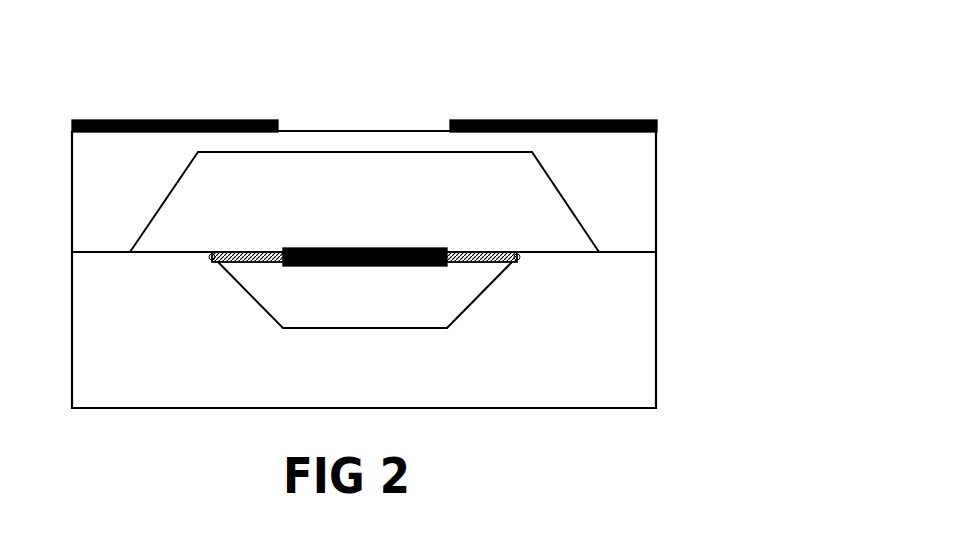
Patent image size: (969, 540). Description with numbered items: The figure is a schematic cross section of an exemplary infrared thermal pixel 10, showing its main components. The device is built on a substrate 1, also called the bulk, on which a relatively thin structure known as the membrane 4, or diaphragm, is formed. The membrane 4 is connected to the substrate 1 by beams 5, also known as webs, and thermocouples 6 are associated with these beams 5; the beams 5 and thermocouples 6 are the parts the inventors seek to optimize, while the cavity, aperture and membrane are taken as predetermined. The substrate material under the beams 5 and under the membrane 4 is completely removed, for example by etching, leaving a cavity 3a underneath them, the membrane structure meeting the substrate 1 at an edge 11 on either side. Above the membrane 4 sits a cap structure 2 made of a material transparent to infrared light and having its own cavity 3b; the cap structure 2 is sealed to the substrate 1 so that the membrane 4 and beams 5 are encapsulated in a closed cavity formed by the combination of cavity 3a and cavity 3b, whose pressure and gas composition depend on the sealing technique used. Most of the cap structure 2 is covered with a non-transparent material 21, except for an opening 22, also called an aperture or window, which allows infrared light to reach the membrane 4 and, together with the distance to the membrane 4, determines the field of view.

The substrate 1 is at (630, 327).
The cap structure 2 is at (630, 203).
The cavity underneath the membrane 3a is at (349, 312).
The cavity of the cap structure 3b is at (349, 213).
The membrane 4 is at (407, 247).
The beams 5 is at (223, 252).
The thermocouples 6 is at (480, 252).
The infrared thermal pixel 10 is at (695, 421).
The edge 11 is at (209, 262).
The non-transparent material 21 is at (593, 118).
The opening 22 is at (344, 96).